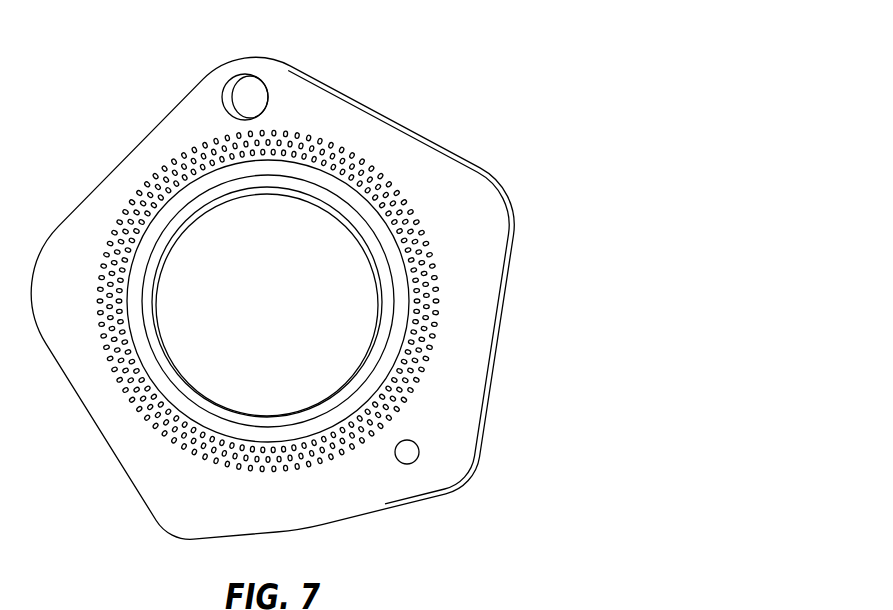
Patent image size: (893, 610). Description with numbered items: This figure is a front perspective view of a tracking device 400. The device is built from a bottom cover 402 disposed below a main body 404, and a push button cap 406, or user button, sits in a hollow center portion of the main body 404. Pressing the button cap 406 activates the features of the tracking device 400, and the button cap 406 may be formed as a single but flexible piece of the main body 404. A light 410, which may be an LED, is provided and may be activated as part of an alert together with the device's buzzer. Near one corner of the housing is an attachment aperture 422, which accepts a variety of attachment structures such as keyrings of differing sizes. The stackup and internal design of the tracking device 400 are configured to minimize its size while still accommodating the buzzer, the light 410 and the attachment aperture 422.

The tracking device 400 is at (471, 72).
The bottom cover 402 is at (505, 196).
The main body 404 is at (419, 152).
The push button cap 406 is at (340, 322).
The light 410 is at (412, 449).
The attachment aperture 422 is at (257, 93).